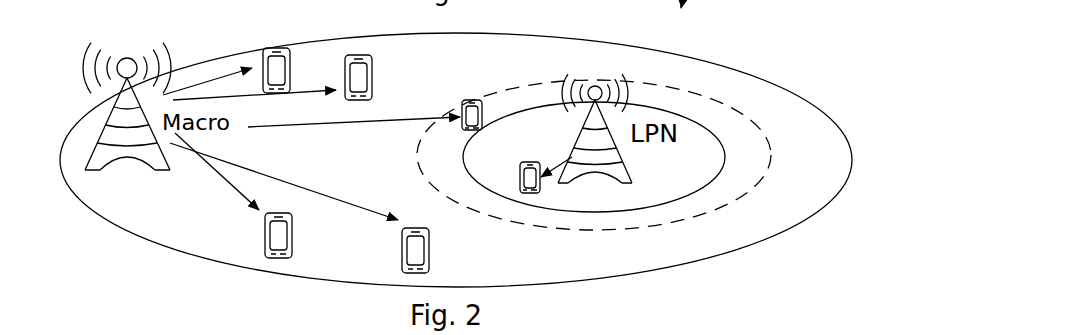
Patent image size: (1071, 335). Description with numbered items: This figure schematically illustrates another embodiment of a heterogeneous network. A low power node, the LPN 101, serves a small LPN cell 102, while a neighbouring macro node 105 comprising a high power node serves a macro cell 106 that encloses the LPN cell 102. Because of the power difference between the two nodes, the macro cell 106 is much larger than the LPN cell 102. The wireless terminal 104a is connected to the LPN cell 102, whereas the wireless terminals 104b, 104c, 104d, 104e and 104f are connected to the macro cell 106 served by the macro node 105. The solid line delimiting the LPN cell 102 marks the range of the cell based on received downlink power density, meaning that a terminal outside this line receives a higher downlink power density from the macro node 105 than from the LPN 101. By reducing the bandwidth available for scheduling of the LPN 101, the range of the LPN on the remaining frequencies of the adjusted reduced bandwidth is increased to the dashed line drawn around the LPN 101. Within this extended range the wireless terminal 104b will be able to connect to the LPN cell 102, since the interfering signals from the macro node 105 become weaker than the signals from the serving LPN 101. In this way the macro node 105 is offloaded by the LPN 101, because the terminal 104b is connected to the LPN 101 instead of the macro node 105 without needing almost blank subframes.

The low power node 101 is at (620, 148).
The LPN cell 102 is at (697, 137).
The wireless terminal 104a is at (530, 163).
The wireless terminal 104b is at (473, 101).
The wireless terminal 104c is at (281, 231).
The wireless terminal 104d is at (418, 246).
The wireless terminal 104e is at (358, 72).
The wireless terminal 104f is at (276, 62).
The macro node 105 is at (157, 168).
The macro cell 106 is at (763, 97).